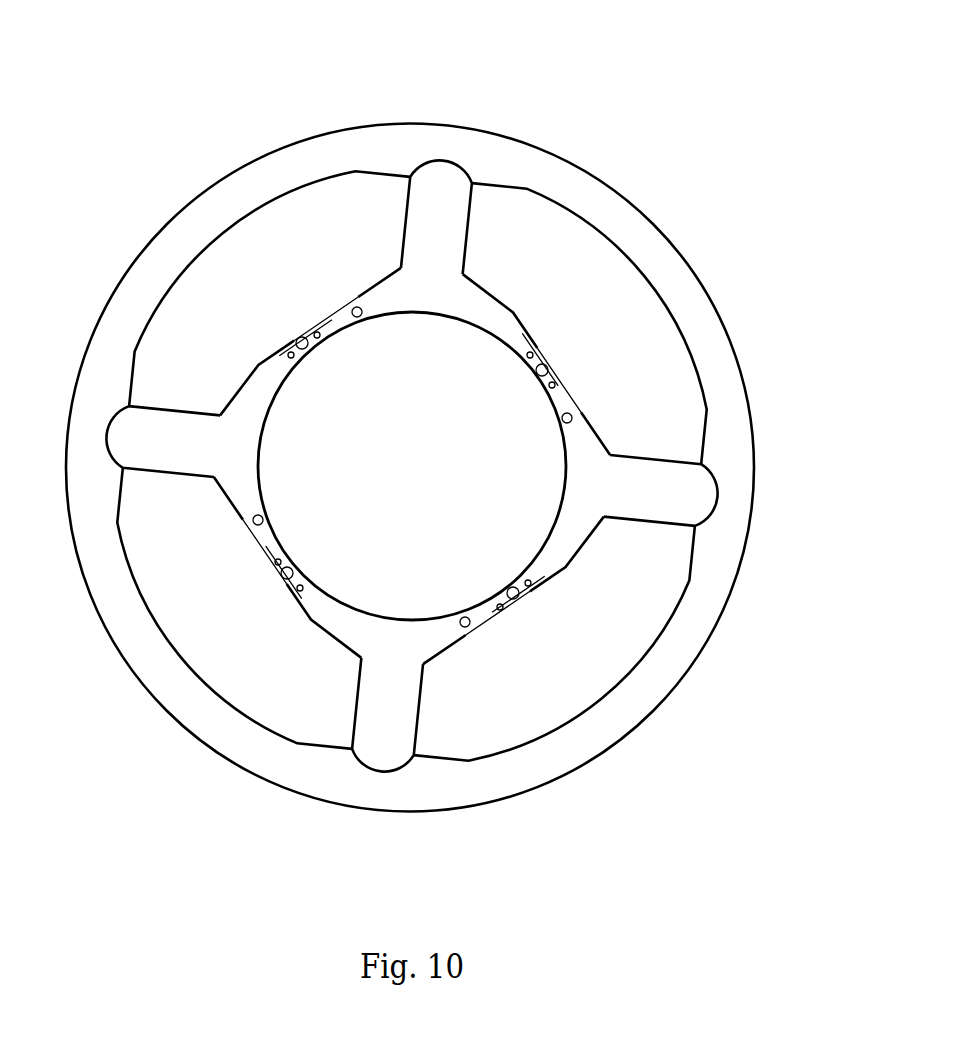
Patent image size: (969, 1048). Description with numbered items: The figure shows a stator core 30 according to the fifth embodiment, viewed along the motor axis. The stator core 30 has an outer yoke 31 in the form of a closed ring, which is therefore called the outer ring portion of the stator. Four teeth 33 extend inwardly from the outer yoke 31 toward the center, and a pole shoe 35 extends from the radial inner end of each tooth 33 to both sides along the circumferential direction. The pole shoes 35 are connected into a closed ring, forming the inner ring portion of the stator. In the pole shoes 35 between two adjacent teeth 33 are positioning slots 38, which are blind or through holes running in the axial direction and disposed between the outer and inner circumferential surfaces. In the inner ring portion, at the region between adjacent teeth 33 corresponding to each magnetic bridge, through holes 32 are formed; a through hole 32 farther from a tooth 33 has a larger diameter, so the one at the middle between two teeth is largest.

The stator core 30 is at (338, 73).
The outer yoke 31 is at (370, 186).
The through holes 32 is at (520, 600).
The teeth 33 is at (445, 247).
The pole shoe 35 is at (515, 328).
The positioning slots 38 is at (357, 307).